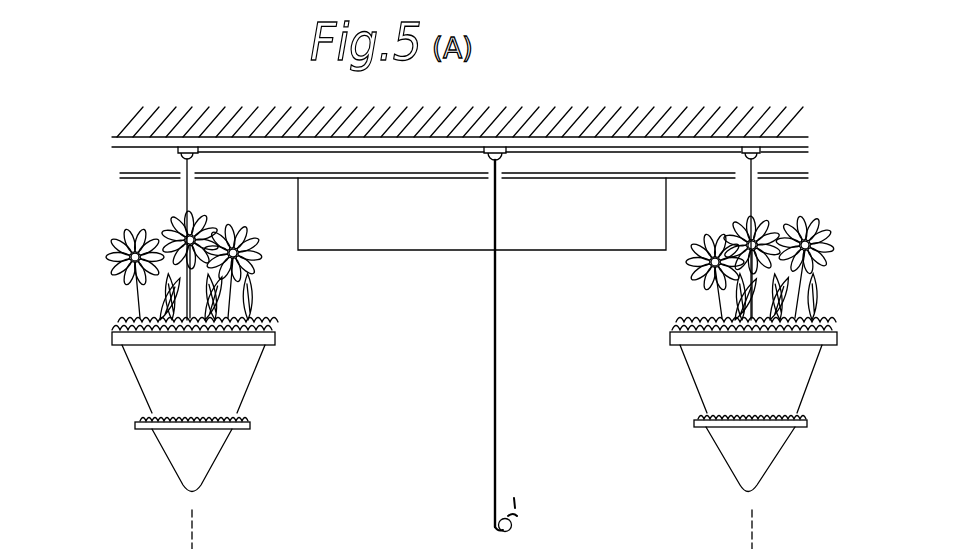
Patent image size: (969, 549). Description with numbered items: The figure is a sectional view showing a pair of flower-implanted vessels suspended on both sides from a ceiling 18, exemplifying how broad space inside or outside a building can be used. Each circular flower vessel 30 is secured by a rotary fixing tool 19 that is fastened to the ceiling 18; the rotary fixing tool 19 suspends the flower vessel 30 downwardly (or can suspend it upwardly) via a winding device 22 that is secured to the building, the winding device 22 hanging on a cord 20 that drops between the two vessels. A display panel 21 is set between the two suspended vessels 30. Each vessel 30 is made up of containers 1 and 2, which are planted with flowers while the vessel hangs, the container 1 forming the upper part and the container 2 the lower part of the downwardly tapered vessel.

The container 1 is at (237, 383).
The container 2 is at (202, 476).
The ceiling 18 is at (496, 147).
The rotary fixing tool 19 is at (188, 147).
The cord 20 is at (497, 450).
The display panel 21 is at (425, 250).
The winding device 22 is at (513, 521).
The flower vessel 30 is at (464, 342).